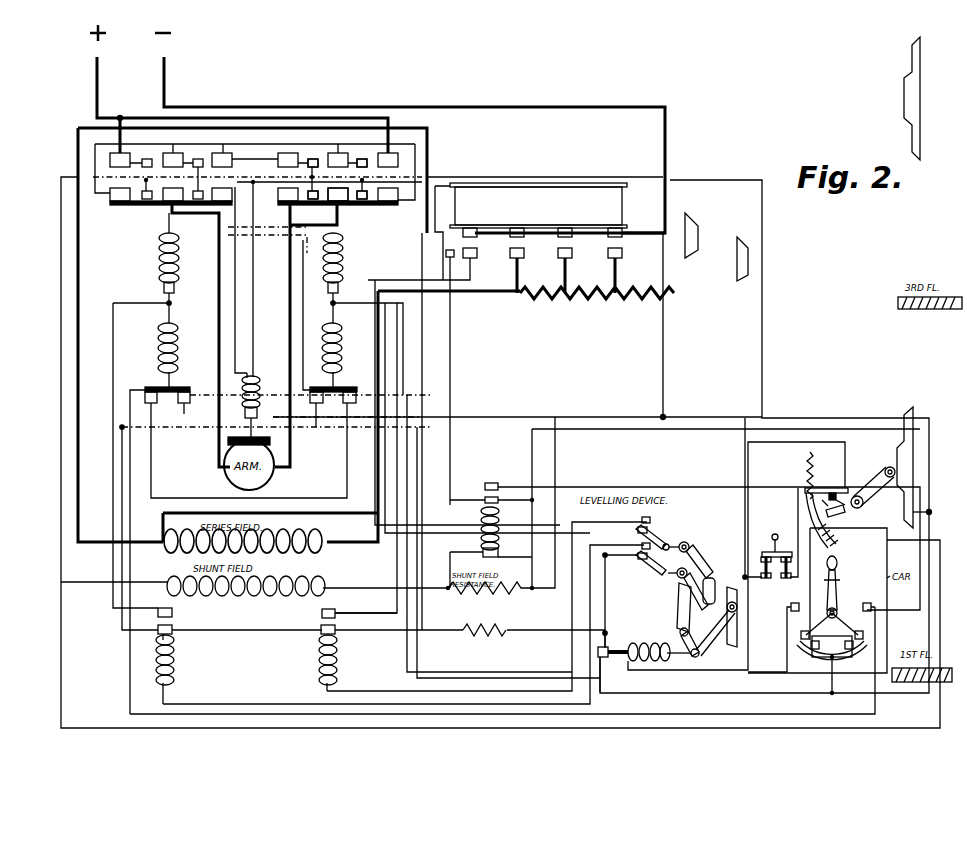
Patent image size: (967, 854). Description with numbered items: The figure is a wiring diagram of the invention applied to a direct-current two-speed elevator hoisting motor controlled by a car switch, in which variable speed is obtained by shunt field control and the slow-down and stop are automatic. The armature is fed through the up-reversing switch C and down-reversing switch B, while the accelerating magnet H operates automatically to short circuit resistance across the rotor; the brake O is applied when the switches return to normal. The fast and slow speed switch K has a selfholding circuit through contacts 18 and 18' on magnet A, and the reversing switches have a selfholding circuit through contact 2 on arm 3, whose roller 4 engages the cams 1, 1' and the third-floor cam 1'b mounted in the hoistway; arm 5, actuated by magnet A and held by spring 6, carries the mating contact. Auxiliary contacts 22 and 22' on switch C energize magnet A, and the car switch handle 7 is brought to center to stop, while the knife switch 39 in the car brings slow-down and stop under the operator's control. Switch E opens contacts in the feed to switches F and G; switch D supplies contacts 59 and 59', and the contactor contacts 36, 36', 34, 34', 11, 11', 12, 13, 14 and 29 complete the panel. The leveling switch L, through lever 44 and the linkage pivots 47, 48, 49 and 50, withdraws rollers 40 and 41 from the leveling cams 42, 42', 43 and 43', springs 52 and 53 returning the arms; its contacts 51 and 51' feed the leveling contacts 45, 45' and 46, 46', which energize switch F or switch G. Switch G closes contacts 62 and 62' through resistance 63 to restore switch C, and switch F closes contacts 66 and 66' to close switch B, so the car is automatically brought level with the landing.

The upper contact of contactor 36 36' is at (313, 147).
The auxiliary contact 22 is at (384, 146).
The contactor contact 36 is at (308, 208).
The auxiliary contact 22' is at (384, 208).
The up-reversing switch C is at (340, 202).
The down-reversing switch B is at (158, 230).
The switch D is at (158, 347).
The contact bridge 34' is at (176, 377).
The contact 59 is at (159, 400).
The contact 59' is at (174, 407).
The contact 34 is at (187, 425).
The brake O is at (268, 390).
The switch E is at (342, 343).
The contact 11 is at (332, 389).
The contact 11' is at (341, 413).
The contact 66' is at (176, 611).
The contact 66 is at (175, 627).
The contact 62' is at (340, 608).
The contact 62 is at (340, 626).
The switch F is at (175, 660).
The switch G is at (318, 660).
The resistance 63 is at (487, 630).
The accelerating magnet H is at (538, 210).
The fast and slow speed switch K is at (499, 528).
The leveling contact 46 is at (654, 516).
The leveling contact 46' is at (652, 528).
The pivot 48 is at (671, 545).
The pivot 50 is at (689, 544).
The leveling contact 45 is at (653, 551).
The leveling contact 45' is at (626, 562).
The switch arm 47 is at (656, 571).
The pivot 49 is at (679, 577).
The leveling cam 43 is at (674, 607).
The spring 53 is at (679, 630).
The roller 41 is at (685, 643).
The lever 44 is at (683, 657).
The roller 40 is at (731, 601).
The leveling cam 42 is at (734, 628).
The leveling switch L is at (649, 640).
The contact 51 is at (611, 601).
The contact 51' is at (593, 651).
The knife switch 39 is at (777, 542).
The spring 6 is at (814, 470).
The magnet A is at (822, 529).
The arm 5 is at (856, 495).
The switch arm 3 is at (873, 484).
The roller 4 is at (889, 467).
The cam 1' is at (833, 486).
The cam plate at third floor 1'b is at (924, 98).
The contact 18 is at (835, 516).
The contact 18' is at (819, 508).
The contact 2 is at (846, 511).
The cam 1 is at (926, 467).
The car switch handle 7 is at (838, 562).
The car switch 13 is at (832, 645).
The contact 14 is at (794, 612).
The contact 29 is at (800, 638).
The contact 12 is at (808, 649).
The spring 52 is at (787, 617).
The leveling cam 43' is at (699, 232).
The leveling cam 42' is at (746, 259).